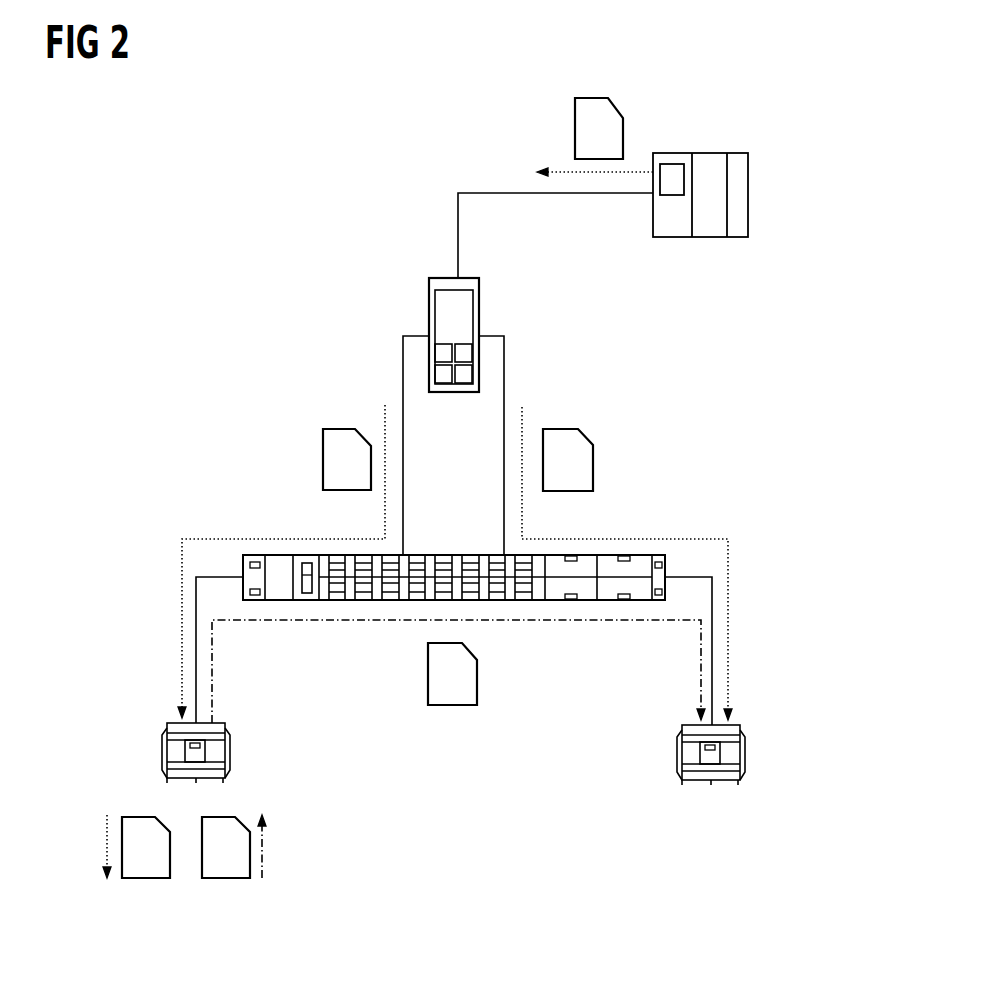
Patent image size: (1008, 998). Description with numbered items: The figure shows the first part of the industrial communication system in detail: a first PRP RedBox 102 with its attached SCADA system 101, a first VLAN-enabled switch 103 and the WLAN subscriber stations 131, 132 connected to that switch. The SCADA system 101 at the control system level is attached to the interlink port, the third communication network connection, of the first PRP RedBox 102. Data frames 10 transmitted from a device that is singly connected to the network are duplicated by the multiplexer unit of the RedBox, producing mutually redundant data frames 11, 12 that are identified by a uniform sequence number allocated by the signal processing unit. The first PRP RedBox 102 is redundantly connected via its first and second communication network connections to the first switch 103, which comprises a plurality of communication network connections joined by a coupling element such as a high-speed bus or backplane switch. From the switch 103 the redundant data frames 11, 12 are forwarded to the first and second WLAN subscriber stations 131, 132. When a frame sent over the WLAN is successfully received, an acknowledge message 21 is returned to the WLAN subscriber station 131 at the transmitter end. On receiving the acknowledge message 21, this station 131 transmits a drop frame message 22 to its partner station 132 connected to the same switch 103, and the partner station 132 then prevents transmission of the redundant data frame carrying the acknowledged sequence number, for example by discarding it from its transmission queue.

The data frame 10 is at (594, 97).
The Supervisory Control and Data Acquisition (SCADA) system 101 is at (713, 153).
The first PRP RedBox 102 is at (479, 295).
The redundant data frame 11 is at (338, 428).
The redundant data frame 12 is at (560, 428).
The first VLAN-enabled switch 103 is at (641, 555).
The WLAN subscriber station 131 is at (228, 748).
The WLAN subscriber station 132 is at (727, 784).
The drop frame message 22 is at (452, 708).
The acknowledge message 21 is at (220, 880).